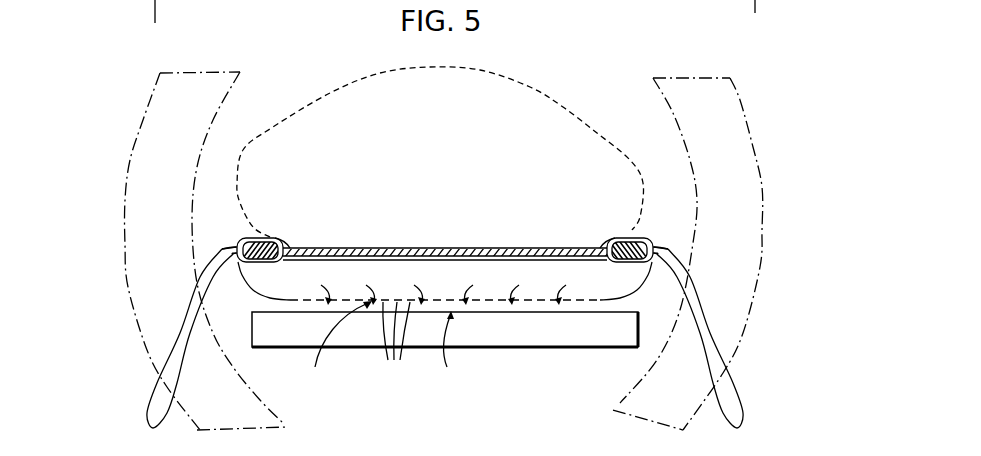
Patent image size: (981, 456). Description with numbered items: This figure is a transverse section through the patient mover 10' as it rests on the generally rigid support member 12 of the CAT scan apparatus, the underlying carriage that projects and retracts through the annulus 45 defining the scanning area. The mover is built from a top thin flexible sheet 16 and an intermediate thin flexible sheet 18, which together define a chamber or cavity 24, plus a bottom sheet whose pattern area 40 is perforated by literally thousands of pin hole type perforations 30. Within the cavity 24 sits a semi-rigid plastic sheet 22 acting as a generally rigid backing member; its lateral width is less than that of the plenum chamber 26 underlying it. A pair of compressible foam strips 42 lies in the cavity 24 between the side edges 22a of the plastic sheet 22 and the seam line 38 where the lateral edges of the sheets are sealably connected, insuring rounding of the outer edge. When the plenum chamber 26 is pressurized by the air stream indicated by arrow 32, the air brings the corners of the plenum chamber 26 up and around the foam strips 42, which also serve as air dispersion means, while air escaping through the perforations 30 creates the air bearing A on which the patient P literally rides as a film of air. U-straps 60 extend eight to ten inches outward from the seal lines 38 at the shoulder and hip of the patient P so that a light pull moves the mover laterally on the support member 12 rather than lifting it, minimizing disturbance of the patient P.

The patient mover 10' is at (445, 204).
The generally rigid support member 12 is at (607, 330).
The top thin flexible sheet 16 is at (352, 248).
The intermediate thin flexible sheet 18 is at (410, 266).
The semi-rigid plastic sheet 22 is at (477, 247).
The side edges of the semi-rigid plastic sheet 22a is at (608, 276).
The chamber or cavity 24 is at (283, 247).
The plenum chamber 26 is at (456, 288).
The pin hole type perforations 30 is at (400, 341).
The air stream arrow 32 is at (775, 18).
The seam line 38 is at (660, 238).
The perforated pattern area 40 is at (461, 346).
The foam strips 42 is at (236, 240).
The annulus 45 is at (743, 167).
The U-straps 60 is at (749, 405).
The air bearing A is at (343, 340).
The patient P is at (563, 110).